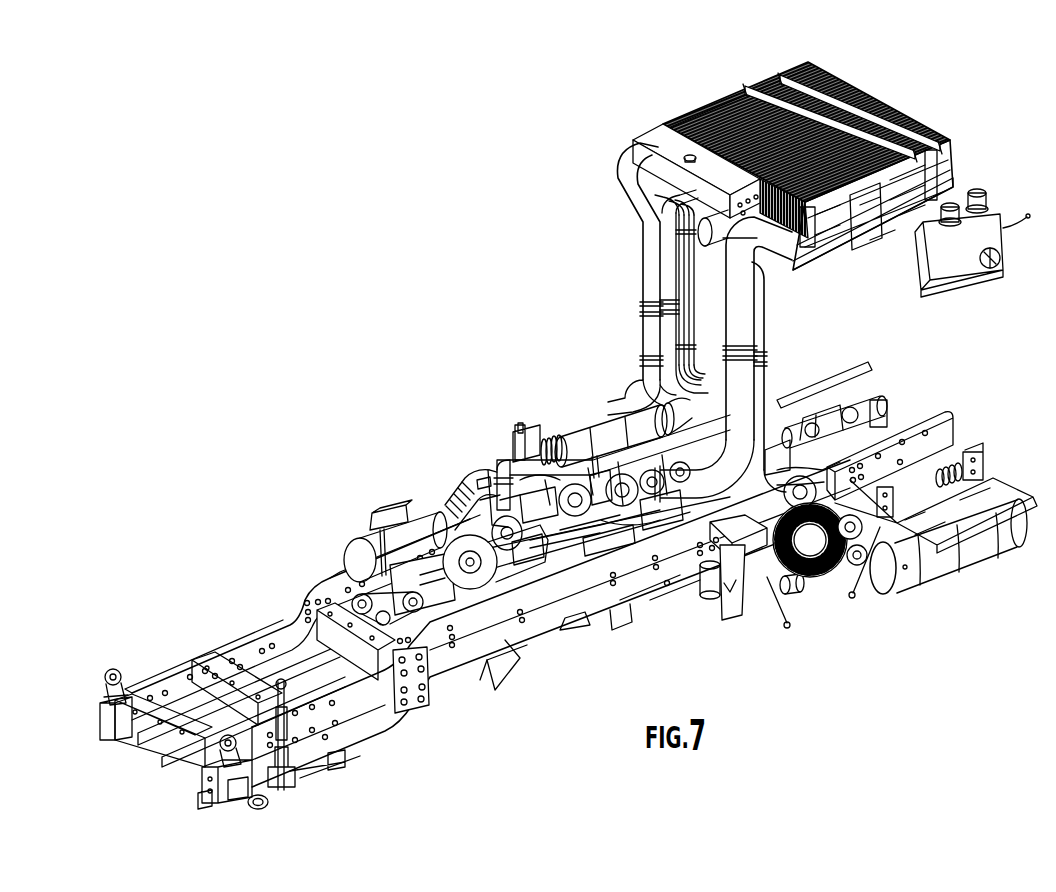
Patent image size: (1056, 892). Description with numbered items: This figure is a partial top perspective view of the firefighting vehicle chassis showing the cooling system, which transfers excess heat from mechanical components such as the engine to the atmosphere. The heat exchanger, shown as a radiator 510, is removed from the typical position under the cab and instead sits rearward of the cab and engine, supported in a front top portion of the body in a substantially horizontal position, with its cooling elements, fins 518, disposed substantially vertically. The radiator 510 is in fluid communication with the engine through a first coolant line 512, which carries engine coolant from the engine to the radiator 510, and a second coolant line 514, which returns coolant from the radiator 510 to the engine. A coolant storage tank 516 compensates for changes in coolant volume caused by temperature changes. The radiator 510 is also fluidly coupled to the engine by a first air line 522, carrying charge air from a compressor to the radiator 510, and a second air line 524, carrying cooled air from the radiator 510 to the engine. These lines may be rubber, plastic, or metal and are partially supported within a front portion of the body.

The radiator 510 is at (917, 118).
The first coolant line 512 is at (757, 348).
The second coolant line 514 is at (650, 333).
The coolant storage tank 516 is at (672, 207).
The fins 518 is at (786, 80).
The first air line 522 is at (660, 283).
The second air line 524 is at (735, 320).